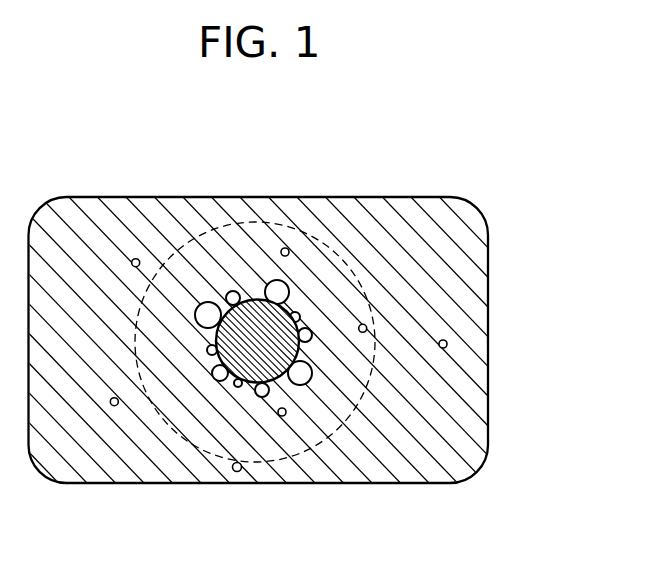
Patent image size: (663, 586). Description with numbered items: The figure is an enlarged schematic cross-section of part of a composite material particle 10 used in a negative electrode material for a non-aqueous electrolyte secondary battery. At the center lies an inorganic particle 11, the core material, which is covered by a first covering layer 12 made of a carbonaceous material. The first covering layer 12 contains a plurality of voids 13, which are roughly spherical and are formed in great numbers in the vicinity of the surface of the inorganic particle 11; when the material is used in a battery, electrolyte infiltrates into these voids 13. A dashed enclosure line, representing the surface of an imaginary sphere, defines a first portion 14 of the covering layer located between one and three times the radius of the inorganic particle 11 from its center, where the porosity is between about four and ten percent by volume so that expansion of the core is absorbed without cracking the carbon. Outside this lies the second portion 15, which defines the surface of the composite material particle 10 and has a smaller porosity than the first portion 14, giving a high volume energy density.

The composite material particle 10 is at (85, 157).
The inorganic particle 11 is at (250, 330).
The first covering layer 12 is at (390, 446).
The void 13 is at (260, 397).
The first portion 14 is at (323, 290).
The second portion 15 is at (422, 270).